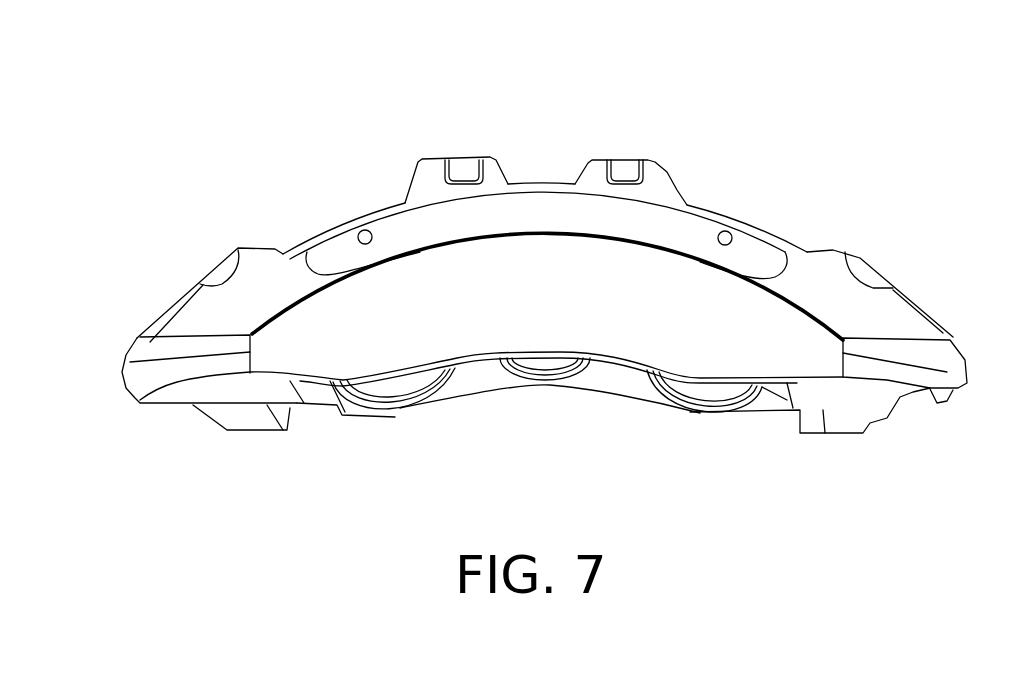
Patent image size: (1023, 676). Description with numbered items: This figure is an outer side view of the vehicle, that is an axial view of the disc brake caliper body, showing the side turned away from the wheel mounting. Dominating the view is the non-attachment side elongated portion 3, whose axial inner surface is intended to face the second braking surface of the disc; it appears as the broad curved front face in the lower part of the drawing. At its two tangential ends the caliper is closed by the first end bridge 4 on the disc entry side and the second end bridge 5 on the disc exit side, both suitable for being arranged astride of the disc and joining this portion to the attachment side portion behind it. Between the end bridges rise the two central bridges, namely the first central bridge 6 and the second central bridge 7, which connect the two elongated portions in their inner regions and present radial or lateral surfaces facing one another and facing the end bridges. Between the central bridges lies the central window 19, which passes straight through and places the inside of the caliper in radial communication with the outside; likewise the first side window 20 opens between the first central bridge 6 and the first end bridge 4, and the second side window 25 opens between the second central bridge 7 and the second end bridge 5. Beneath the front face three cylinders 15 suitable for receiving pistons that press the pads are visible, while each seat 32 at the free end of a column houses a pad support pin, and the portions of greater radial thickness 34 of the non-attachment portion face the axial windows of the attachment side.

The non-attachment side elongated portion 3 is at (487, 330).
The first end bridge 4 is at (188, 287).
The second end bridge 5 is at (915, 313).
The first central bridge 6 is at (417, 170).
The second central bridge 7 is at (652, 165).
The cylinder 15 is at (405, 408).
The central window 19 is at (535, 162).
The first side window 20 is at (292, 225).
The second side window 25 is at (757, 200).
The seat 32 is at (362, 231).
The portion of greater radial thickness 34 is at (403, 232).